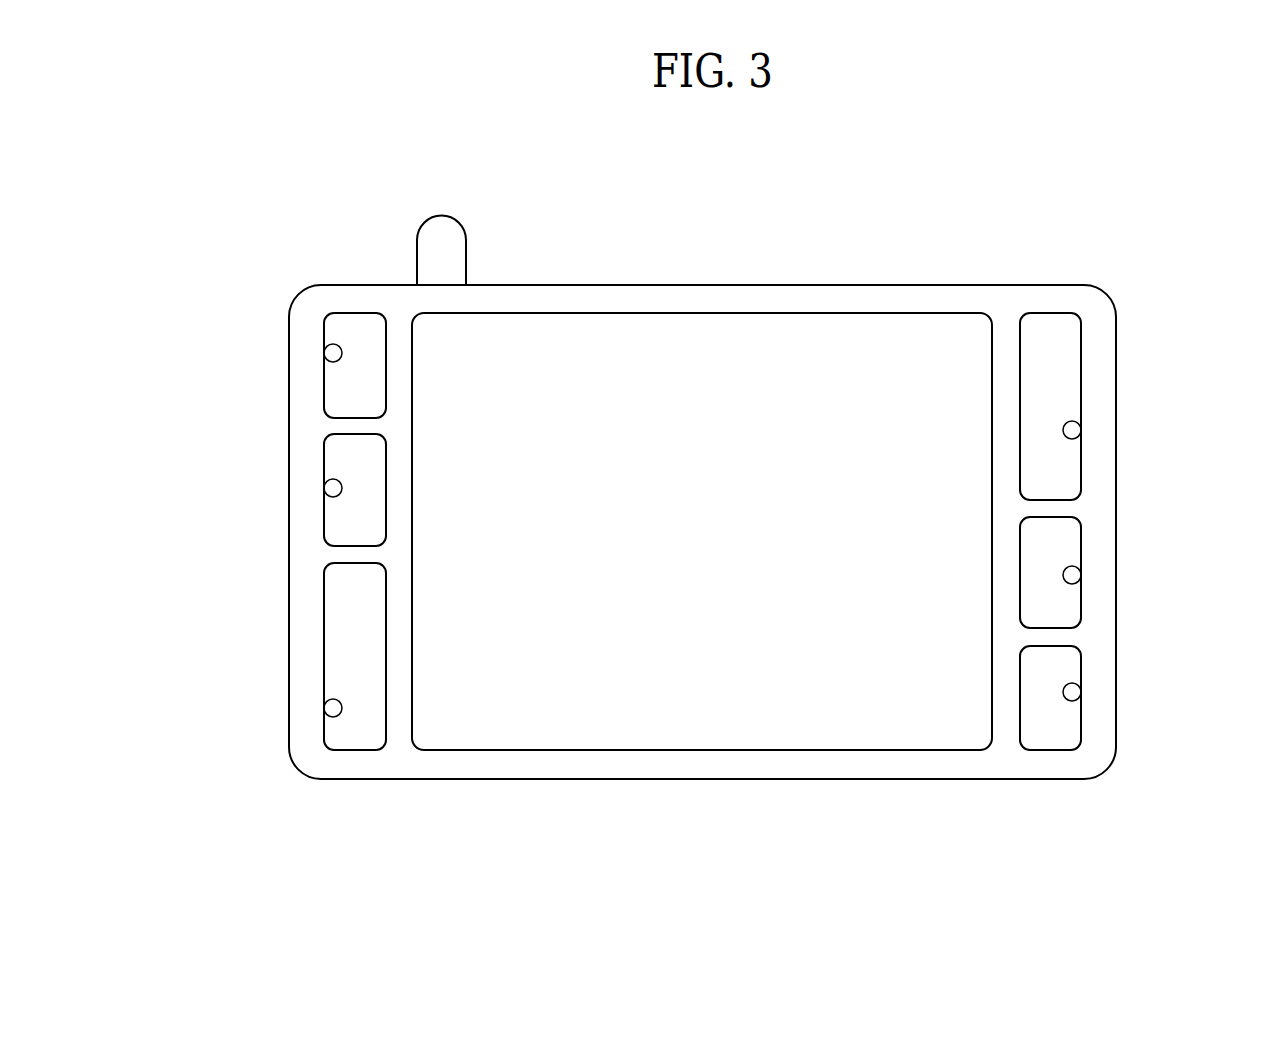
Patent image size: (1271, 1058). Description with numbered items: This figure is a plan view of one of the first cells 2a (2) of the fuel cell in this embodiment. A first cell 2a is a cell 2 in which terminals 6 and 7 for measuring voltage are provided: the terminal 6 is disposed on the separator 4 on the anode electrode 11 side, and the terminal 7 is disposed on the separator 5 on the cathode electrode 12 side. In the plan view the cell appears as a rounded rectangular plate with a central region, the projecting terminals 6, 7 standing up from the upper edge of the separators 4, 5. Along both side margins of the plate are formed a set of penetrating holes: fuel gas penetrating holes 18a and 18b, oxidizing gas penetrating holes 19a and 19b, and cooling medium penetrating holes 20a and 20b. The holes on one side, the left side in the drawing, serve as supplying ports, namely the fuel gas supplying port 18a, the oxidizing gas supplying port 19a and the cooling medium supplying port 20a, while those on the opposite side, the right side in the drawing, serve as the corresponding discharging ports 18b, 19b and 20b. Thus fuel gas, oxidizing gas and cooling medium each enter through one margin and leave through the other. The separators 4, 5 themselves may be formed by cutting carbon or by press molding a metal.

The first cell 2a is at (702, 494).
The cell 2 is at (702, 494).
The separator 4 is at (702, 488).
The separator 5 is at (837, 285).
The terminal 6 is at (475, 216).
The terminal 7 is at (447, 216).
The anode electrode 11 is at (588, 737).
The cathode electrode 12 is at (675, 737).
The fuel gas penetrating hole 18a is at (327, 362).
The fuel gas penetrating hole 18b is at (1074, 703).
The oxidizing gas penetrating hole 19a is at (328, 717).
The oxidizing gas penetrating hole 19b is at (1074, 440).
The cooling medium penetrating hole 20a is at (327, 497).
The cooling medium penetrating hole 20b is at (1074, 585).